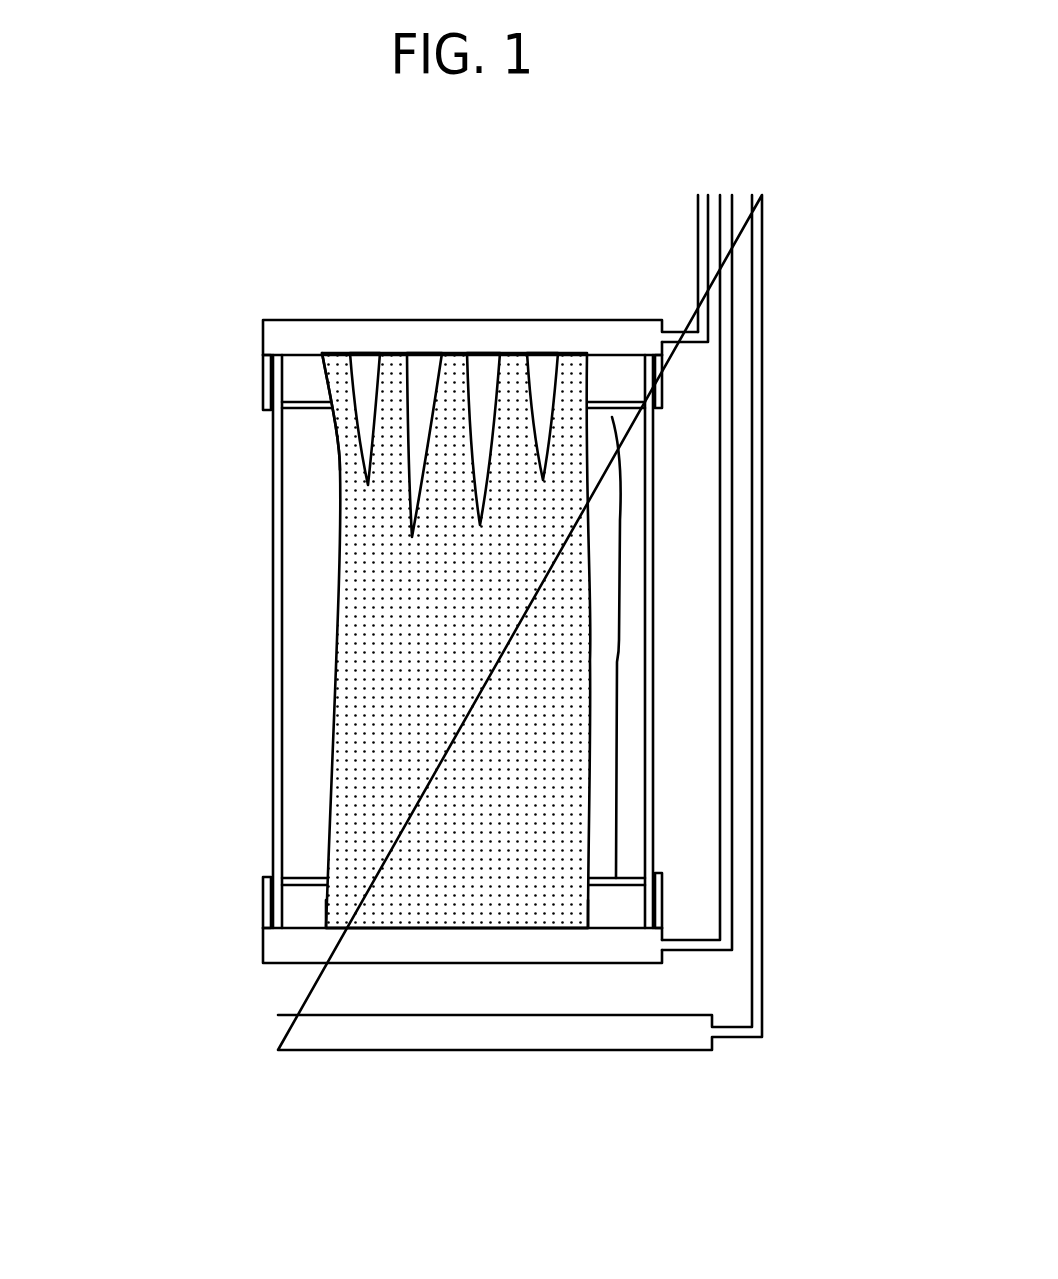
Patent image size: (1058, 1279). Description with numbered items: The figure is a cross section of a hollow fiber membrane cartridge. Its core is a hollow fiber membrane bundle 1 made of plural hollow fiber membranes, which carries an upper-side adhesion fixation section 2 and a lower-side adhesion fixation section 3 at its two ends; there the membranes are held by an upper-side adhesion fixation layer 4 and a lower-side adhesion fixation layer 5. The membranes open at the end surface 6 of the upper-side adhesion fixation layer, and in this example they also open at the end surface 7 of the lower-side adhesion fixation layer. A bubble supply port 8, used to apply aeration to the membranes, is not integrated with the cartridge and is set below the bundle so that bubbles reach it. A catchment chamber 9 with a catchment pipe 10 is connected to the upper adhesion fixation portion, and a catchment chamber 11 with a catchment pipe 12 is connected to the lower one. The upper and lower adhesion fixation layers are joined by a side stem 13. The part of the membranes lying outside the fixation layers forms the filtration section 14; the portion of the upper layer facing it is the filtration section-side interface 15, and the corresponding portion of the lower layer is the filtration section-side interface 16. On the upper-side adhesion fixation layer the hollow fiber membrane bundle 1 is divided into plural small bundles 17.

The hollow fiber membrane bundle 1 is at (590, 693).
The upper-side adhesion fixation section 2 is at (262, 385).
The lower-side adhesion fixation section 3 is at (263, 902).
The upper-side adhesion fixation layer 4 is at (292, 383).
The lower-side adhesion fixation layer 5 is at (302, 907).
The end surface of the upper-side adhesion fixation layer 6 is at (350, 355).
The end surface of the lower-side adhesion fixation layer 7 is at (337, 930).
The bubble supply port 8 is at (513, 1032).
The catchment chamber 9 is at (458, 337).
The catchment pipe 10 is at (698, 257).
The catchment chamber 11 is at (510, 947).
The catchment pipe 12 is at (733, 303).
The side stem 13 is at (270, 592).
The filtration section 14 is at (625, 647).
The filtration section-side interface of the upper-side adhesion fixation layer 15 is at (655, 403).
The filtration section-side interface of the lower-side adhesion fixation layer 16 is at (655, 885).
The small bundles 17 is at (332, 433).